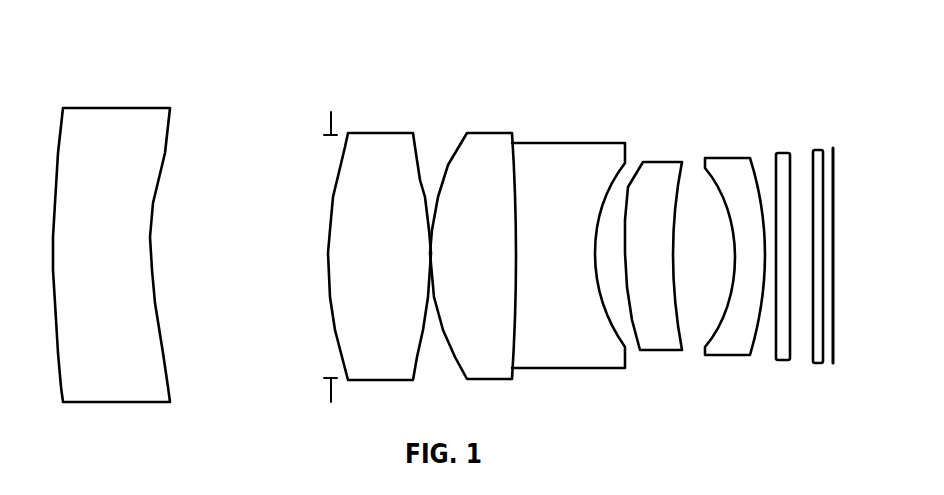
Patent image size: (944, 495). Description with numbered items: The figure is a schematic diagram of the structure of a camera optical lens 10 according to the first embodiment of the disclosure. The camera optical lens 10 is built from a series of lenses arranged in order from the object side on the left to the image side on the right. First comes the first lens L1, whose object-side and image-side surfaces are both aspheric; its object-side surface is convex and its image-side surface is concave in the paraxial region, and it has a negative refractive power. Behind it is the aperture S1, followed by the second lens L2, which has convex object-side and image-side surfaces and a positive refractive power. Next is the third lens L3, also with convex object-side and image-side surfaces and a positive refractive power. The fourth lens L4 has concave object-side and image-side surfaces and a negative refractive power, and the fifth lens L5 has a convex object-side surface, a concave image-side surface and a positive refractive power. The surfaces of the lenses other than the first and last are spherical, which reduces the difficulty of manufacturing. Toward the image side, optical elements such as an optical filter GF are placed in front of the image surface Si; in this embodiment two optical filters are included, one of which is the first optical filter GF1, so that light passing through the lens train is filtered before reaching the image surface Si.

The camera optical lens 10 is at (462, 32).
The first lens L1 is at (111, 240).
The aperture S1 is at (322, 245).
The second lens L2 is at (379, 241).
The third lens L3 is at (527, 240).
The fourth lens L4 is at (653, 241).
The fifth lens L5 is at (735, 243).
The first optical filter GF1 is at (776, 246).
The optical filter GF is at (814, 242).
The image surface Si is at (846, 247).